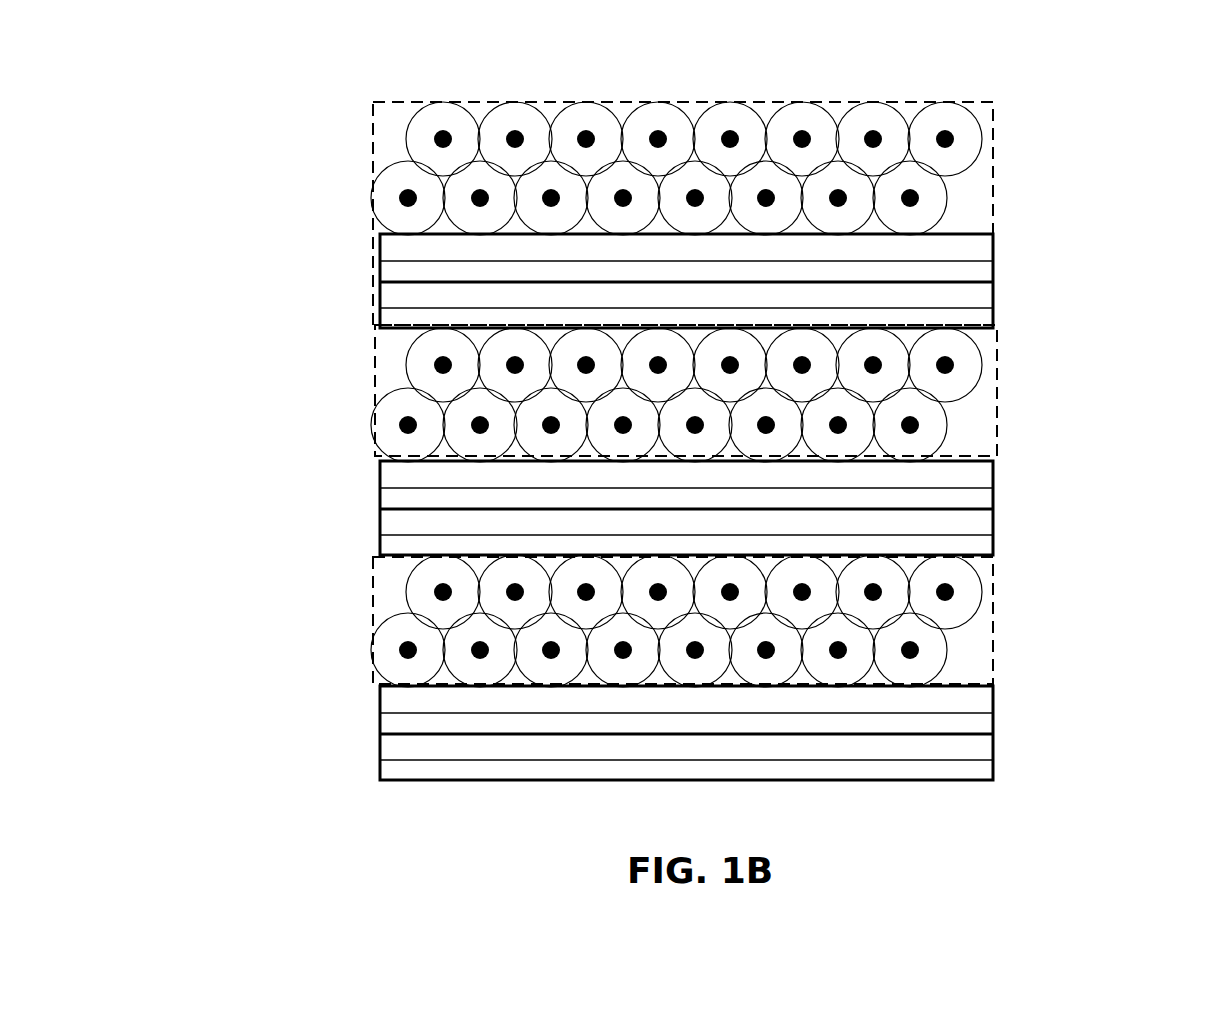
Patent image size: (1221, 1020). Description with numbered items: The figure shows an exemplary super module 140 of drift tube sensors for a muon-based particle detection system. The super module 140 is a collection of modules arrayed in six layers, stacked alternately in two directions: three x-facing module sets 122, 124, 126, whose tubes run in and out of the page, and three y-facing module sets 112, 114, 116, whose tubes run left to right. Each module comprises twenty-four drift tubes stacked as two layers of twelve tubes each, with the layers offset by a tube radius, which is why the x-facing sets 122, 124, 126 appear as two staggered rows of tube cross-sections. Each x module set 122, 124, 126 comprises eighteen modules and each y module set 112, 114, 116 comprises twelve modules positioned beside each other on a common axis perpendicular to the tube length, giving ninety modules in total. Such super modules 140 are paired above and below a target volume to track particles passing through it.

The super module 140 is at (196, 133).
The y-facing module layer 112 is at (993, 285).
The y-facing module layer 114 is at (993, 510).
The y-facing module layer 116 is at (993, 732).
The x-facing module set 122 is at (372, 157).
The x-facing module set 124 is at (375, 372).
The x-facing module set 126 is at (372, 622).